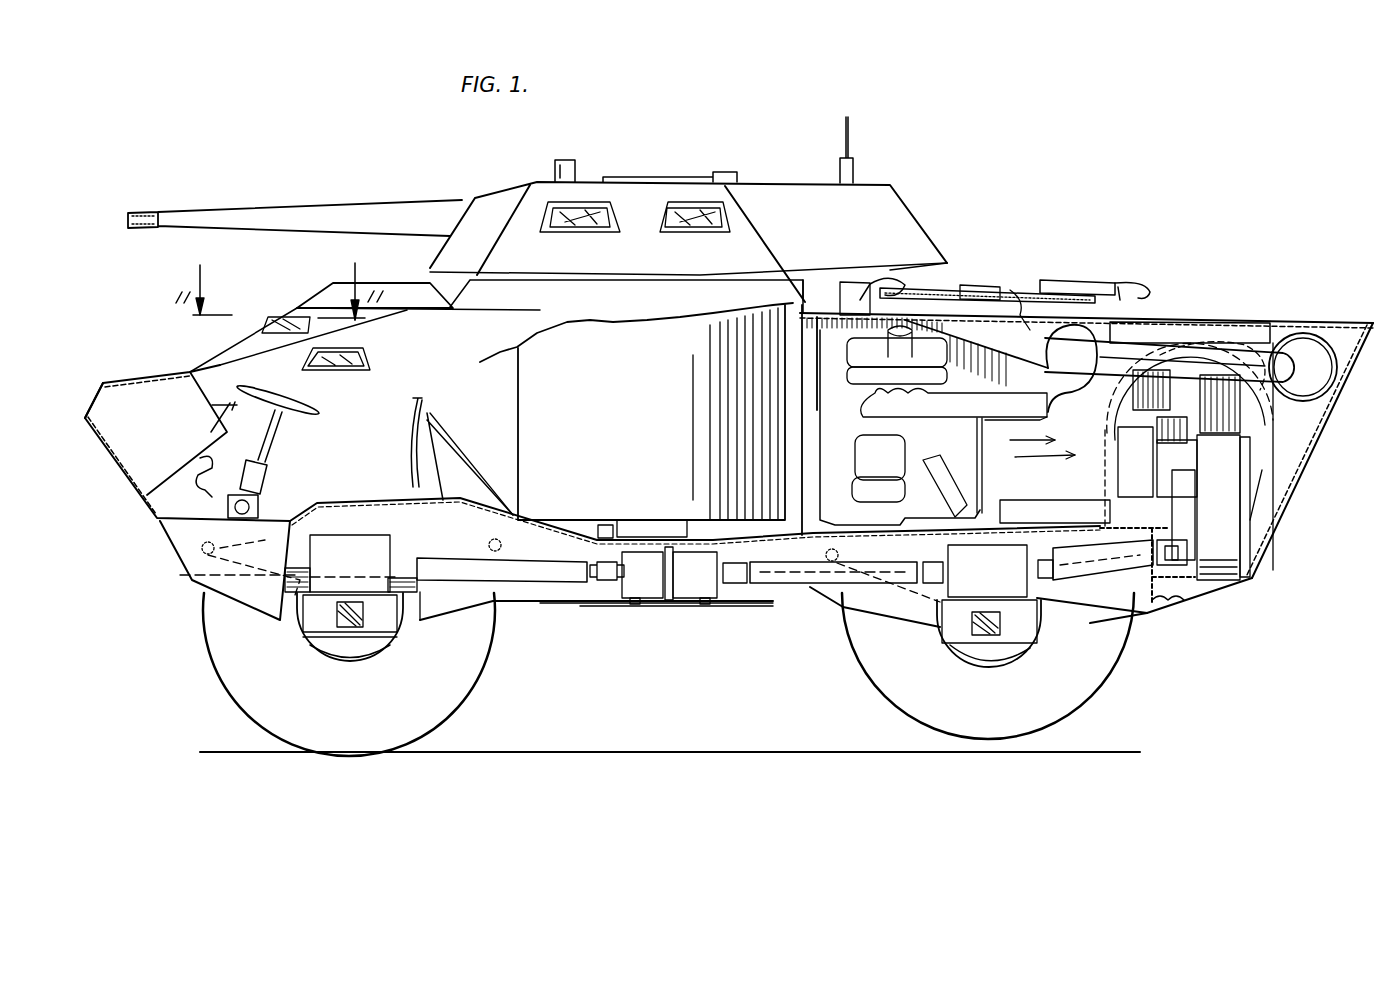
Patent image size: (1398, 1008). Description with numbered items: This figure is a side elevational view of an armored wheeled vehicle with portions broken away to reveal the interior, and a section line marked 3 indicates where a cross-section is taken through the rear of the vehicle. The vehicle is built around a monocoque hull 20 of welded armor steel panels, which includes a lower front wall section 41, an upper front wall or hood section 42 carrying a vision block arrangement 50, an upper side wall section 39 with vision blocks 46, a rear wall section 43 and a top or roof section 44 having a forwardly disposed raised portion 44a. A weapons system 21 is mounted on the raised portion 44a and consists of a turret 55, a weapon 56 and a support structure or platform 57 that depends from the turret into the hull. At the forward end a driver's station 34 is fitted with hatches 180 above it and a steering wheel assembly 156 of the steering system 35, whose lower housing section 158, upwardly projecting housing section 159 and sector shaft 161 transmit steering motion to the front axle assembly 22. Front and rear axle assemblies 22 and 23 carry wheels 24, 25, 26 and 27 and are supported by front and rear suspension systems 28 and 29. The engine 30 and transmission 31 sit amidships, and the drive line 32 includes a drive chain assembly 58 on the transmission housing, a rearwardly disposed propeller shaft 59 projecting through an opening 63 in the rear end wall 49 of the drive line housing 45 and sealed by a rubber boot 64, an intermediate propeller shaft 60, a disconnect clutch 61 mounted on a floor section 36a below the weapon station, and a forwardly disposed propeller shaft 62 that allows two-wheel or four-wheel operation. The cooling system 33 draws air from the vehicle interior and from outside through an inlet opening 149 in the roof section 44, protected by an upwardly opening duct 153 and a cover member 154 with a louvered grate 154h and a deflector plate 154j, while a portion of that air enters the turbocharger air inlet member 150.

The hull 20 is at (1270, 312).
The weapons system 21 is at (789, 178).
The front axle assembly 22 is at (385, 618).
The rear axle assembly 23 is at (1012, 630).
The wheel 24 is at (353, 660).
The wheel 25 is at (998, 660).
The wheel 26 is at (435, 722).
The wheel 27 is at (1075, 725).
The front suspension system 28 is at (262, 588).
The rear suspension system 29 is at (890, 597).
The engine 30 is at (952, 421).
The transmission 31 is at (1047, 473).
The drive line 32 is at (765, 588).
The cooling system 33 is at (1290, 435).
The driver's station 34 is at (440, 400).
The steering system 35 is at (223, 505).
The floor section 36a is at (613, 610).
The upper side wall section 39 is at (505, 345).
The lower front wall section 41 is at (112, 468).
The upper front wall or hood section 42 is at (187, 372).
The rear wall section 43 is at (1287, 495).
The top or roof section 44 is at (1212, 320).
The raised portion 44a is at (765, 285).
The drive line housing 45 is at (545, 520).
The vision block 46 is at (372, 352).
The rear end wall 49 is at (1165, 605).
The vision block arrangement 50 is at (250, 328).
The turret 55 is at (948, 258).
The weapon 56 is at (303, 216).
The support structure or platform 57 is at (667, 421).
The drive chain assembly 58 is at (1227, 540).
The rearwardly disposed propeller shaft 59 is at (1092, 570).
The intermediate propeller shaft 60 is at (805, 600).
The disconnect clutch 61 is at (675, 630).
The forwardly disposed propeller shaft 62 is at (525, 600).
The opening 63 is at (1135, 548).
The rubber boot 64 is at (1172, 598).
The inlet opening 149 is at (1085, 300).
The air inlet member 150 is at (1330, 407).
The duct 153 is at (995, 300).
The cover member 154 is at (945, 282).
The louvered grate 154h is at (1118, 287).
The deflector plate 154j is at (985, 285).
The steering wheel assembly 156 is at (272, 447).
The lower housing section 158 is at (258, 503).
The upwardly projecting housing section 159 is at (265, 477).
The sector shaft 161 is at (235, 520).
The hatch 180 is at (330, 292).
The section line 3- 3 is at (1190, 456).